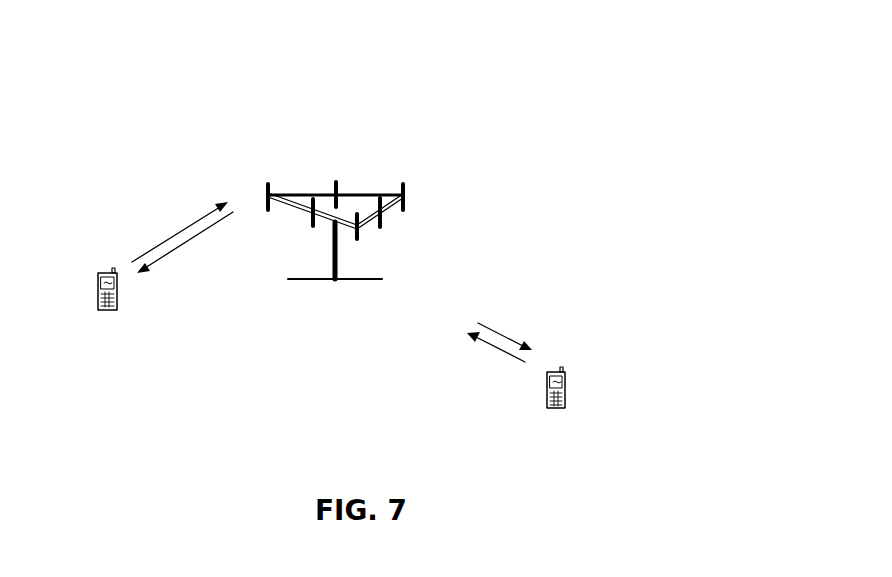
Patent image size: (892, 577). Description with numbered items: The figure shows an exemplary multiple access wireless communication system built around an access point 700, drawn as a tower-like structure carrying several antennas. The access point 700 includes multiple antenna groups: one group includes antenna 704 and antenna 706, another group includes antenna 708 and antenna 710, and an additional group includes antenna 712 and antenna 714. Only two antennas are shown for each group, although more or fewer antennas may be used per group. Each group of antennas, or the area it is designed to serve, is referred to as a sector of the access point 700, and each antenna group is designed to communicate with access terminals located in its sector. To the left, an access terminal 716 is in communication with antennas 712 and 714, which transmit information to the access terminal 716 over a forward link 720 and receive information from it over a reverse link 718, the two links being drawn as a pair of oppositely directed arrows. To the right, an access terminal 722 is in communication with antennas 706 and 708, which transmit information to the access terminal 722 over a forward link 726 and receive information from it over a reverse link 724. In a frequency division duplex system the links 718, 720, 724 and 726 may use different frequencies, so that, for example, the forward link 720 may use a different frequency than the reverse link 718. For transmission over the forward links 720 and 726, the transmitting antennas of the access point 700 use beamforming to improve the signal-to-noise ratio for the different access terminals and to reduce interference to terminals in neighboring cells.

The access point 700 is at (323, 280).
The antenna 704 is at (359, 236).
The antenna 706 is at (383, 225).
The antenna 708 is at (407, 205).
The antenna 710 is at (338, 182).
The antenna 712 is at (270, 193).
The antenna 714 is at (313, 226).
The access terminal 716 is at (110, 272).
The reverse link 718 is at (178, 228).
The forward link 720 is at (188, 245).
The access terminal 722 is at (558, 370).
The reverse link 724 is at (484, 338).
The forward link 726 is at (508, 336).